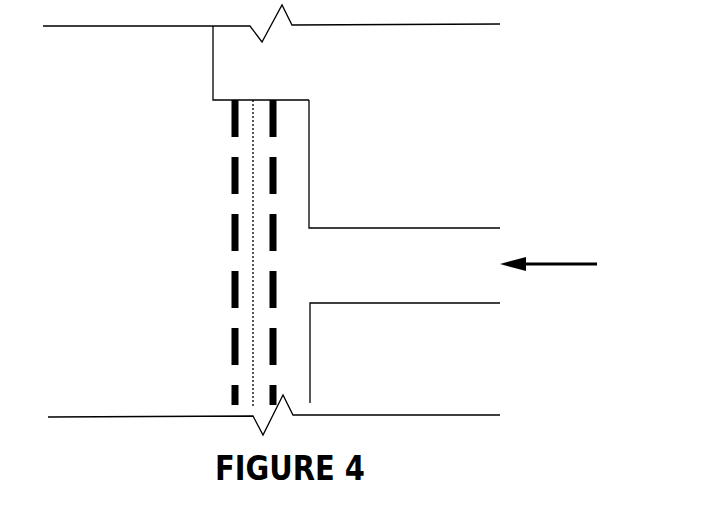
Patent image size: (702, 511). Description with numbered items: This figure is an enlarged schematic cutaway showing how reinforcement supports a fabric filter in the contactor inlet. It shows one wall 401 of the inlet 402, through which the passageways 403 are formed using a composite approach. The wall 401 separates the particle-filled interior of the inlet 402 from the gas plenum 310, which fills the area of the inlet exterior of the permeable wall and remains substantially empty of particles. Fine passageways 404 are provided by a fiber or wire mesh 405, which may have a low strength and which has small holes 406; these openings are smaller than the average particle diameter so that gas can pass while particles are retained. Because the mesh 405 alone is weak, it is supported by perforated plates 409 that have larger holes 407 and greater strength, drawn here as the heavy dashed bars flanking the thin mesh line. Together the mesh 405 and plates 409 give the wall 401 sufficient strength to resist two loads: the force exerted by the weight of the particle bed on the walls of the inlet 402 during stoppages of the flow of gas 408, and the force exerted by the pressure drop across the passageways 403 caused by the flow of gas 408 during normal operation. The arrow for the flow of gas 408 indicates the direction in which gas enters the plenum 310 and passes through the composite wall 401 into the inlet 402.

The gas plenum 310 is at (300, 112).
The wall 401 is at (311, 136).
The inlet 402 is at (413, 97).
The passageways 403 is at (228, 258).
The fine passageways 404 is at (253, 260).
The fiber or wire mesh 405 is at (255, 185).
The small holes 406 is at (255, 313).
The larger holes 407 is at (235, 145).
The flow of gas 408 is at (558, 262).
The perforated plates 409 is at (233, 340).